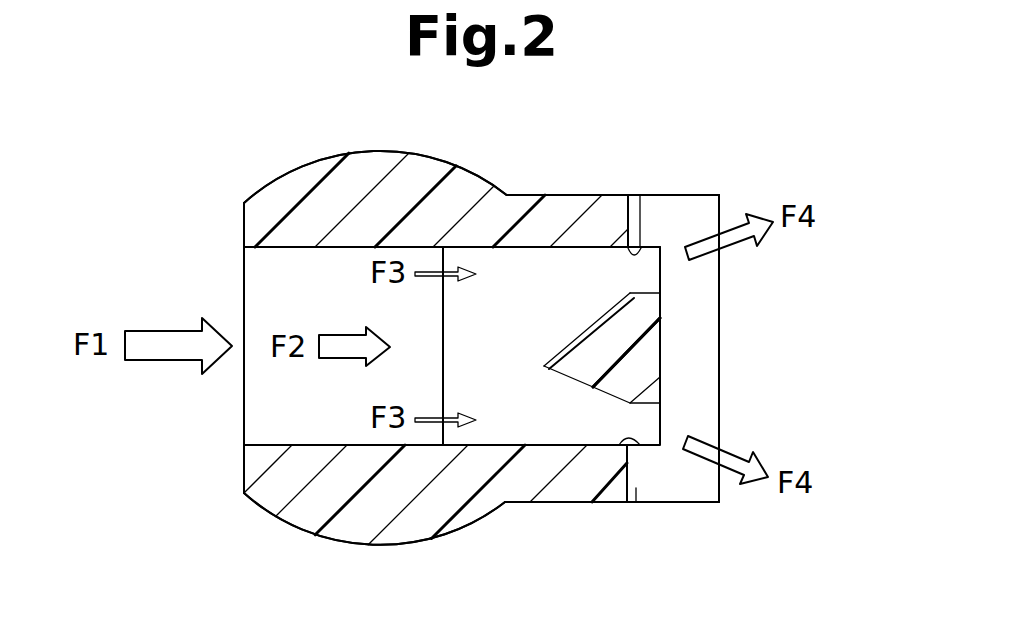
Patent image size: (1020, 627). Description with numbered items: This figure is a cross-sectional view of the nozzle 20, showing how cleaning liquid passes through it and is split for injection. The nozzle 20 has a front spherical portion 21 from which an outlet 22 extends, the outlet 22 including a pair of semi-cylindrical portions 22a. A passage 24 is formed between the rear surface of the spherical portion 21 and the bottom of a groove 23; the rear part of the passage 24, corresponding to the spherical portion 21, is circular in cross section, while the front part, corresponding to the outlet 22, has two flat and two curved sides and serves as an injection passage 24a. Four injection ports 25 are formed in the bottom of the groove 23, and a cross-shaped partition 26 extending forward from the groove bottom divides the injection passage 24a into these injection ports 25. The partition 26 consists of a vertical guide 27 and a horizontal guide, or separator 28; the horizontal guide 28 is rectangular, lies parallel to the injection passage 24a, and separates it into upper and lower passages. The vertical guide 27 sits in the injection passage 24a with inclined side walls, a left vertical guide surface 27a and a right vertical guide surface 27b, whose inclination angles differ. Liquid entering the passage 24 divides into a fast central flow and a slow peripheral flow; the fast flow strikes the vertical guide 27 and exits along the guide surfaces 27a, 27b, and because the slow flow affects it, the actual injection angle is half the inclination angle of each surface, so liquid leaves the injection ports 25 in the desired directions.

The nozzle 20 is at (479, 160).
The spherical portion 21 is at (368, 148).
The outlet 22 is at (592, 198).
The semi-cylindrical portions 22a is at (708, 291).
The groove 23 is at (631, 485).
The passage 24 is at (262, 445).
The injection passage 24a is at (547, 249).
The injection ports 25 is at (640, 248).
The partition 26 is at (776, 342).
The vertical guide 27 is at (650, 353).
The left vertical guide surface 27a is at (583, 333).
The right vertical guide surface 27b is at (602, 393).
The horizontal guide 28 is at (647, 427).